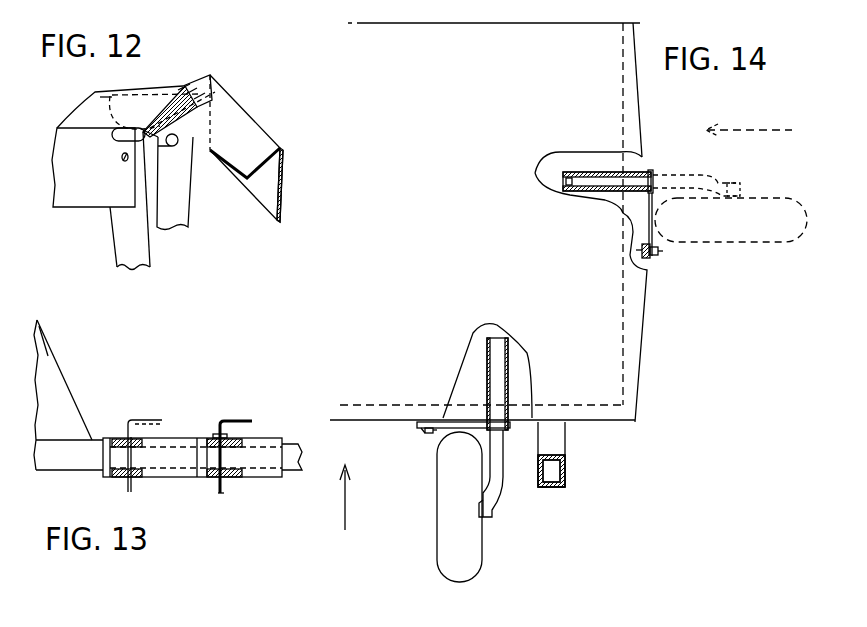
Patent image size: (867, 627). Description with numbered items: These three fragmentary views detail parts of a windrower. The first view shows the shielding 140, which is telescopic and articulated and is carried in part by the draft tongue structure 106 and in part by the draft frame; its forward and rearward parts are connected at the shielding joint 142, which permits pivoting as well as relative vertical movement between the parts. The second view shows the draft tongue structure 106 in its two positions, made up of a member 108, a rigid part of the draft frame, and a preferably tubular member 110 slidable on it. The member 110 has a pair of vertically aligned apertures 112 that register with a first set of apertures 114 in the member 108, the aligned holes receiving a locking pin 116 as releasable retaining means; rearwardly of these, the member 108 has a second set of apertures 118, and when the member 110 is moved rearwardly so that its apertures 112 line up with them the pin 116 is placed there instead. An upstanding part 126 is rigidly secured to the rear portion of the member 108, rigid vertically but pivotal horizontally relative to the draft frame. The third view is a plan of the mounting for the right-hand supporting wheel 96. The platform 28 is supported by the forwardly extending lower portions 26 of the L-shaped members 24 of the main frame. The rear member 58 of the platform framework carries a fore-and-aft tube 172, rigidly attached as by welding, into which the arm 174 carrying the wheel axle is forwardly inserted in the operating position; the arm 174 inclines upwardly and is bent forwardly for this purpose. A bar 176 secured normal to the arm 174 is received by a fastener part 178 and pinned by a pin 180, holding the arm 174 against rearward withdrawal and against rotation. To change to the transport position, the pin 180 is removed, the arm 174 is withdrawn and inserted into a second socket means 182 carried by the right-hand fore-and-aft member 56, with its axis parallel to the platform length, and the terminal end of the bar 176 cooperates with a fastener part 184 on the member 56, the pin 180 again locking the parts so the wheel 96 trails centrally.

In FIG. 14, the L-shaped member 24 is at (567, 483).
In FIG. 14, the lower portion 26 is at (565, 440).
In FIG. 14, the windrower platform 28 is at (633, 413).
In FIG. 14, the right-hand fore-and-aft member 56 is at (622, 345).
In FIG. 14, the rear member 58 is at (458, 407).
In FIG. 14, the right-hand supporting wheel 96 is at (783, 198).
In FIG. 13, the draft tongue structure 106 is at (94, 378).
In FIG. 13, the member 108 is at (58, 463).
In FIG. 13, the member 110 is at (267, 438).
In FIG. 13, the apertures 112 is at (215, 438).
In FIG. 13, the first set of apertures 114 is at (212, 487).
In FIG. 13, the locking pin 116 is at (138, 420).
In FIG. 13, the second set of apertures 118 is at (138, 475).
In FIG. 13, the upstanding part 126 is at (62, 326).
In FIG. 12, the shielding 140 is at (247, 123).
In FIG. 12, the shielding joint 142 is at (187, 87).
In FIG. 14, the tube 172 is at (510, 350).
In FIG. 14, the arm 174 is at (500, 497).
In FIG. 14, the bar 176 is at (652, 170).
In FIG. 14, the fastener part 178 is at (423, 432).
In FIG. 14, the pin 180 is at (660, 250).
In FIG. 14, the second socket means 182 is at (593, 173).
In FIG. 14, the fastener part 184 is at (642, 250).